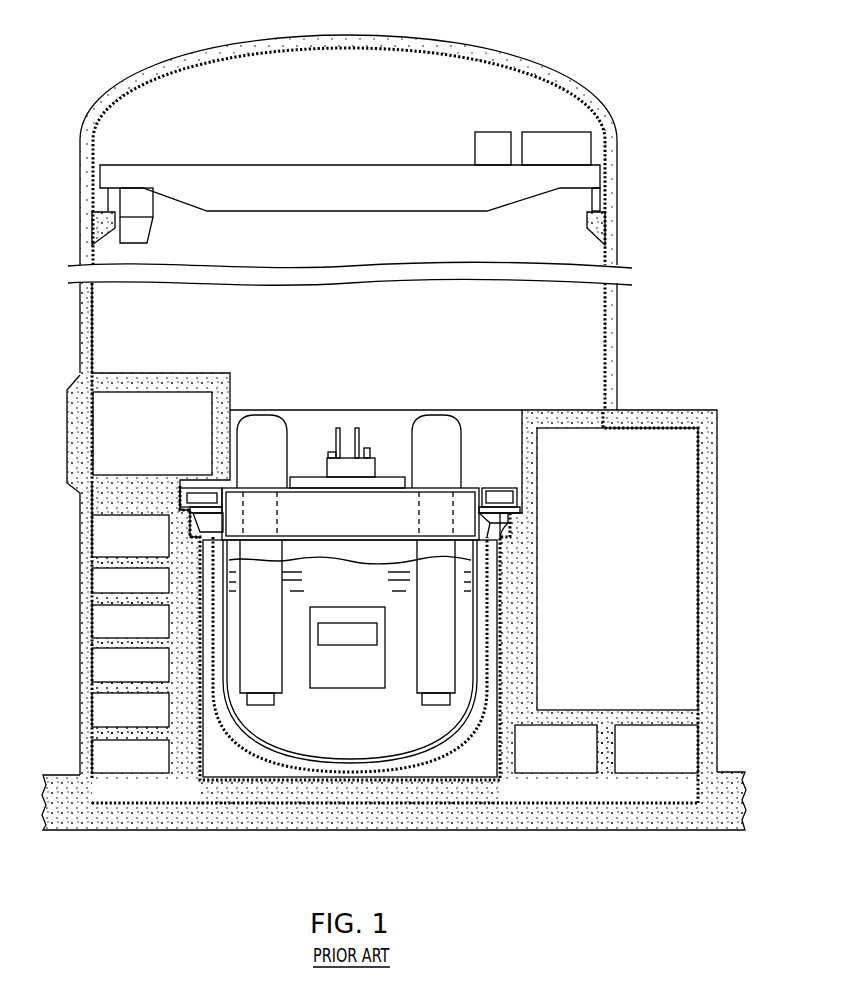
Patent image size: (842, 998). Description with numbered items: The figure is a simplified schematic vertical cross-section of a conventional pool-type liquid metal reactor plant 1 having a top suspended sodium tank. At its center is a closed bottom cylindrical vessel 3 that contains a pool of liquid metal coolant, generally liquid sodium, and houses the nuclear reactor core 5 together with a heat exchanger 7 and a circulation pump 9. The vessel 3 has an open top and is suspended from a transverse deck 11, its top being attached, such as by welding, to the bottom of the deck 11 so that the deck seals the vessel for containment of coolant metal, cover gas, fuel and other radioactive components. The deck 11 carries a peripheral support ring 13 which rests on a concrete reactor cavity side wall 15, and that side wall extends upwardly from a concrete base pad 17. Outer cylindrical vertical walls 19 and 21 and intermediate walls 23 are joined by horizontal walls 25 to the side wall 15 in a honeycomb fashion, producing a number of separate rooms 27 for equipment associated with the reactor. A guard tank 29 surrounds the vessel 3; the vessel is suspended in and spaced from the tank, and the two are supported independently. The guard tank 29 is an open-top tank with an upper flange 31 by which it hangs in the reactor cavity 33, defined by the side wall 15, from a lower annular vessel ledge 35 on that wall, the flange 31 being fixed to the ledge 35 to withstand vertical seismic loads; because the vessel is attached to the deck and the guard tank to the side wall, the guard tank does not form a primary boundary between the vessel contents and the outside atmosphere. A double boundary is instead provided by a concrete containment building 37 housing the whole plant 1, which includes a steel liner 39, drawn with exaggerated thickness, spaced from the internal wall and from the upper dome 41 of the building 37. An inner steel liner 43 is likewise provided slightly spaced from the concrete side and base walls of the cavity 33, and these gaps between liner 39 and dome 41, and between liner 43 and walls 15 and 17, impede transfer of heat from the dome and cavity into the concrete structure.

The liquid metal reactor plant 1 is at (119, 57).
The closed bottom cylindrical vessel 3 is at (345, 749).
The nuclear reactor core 5 is at (353, 676).
The heat exchanger 7 is at (266, 661).
The circulation pump 9 is at (440, 654).
The transverse deck 11 is at (361, 516).
The peripheral support ring 13 is at (497, 485).
The reactor cavity side wall 15 is at (180, 772).
The concrete base pad 17 is at (243, 790).
The outer cylindrical vertical wall 19 is at (75, 688).
The outer cylindrical vertical wall 21 is at (717, 605).
The intermediate wall 23 is at (212, 433).
The horizontal wall 25 is at (124, 607).
The room 27 is at (134, 439).
The guard tank 29 is at (429, 754).
The upper flange 31 is at (511, 518).
The reactor cavity 33 is at (232, 766).
The annular vessel ledge 35 is at (509, 540).
The concrete containment building 37 is at (652, 407).
The steel liner 39 is at (94, 325).
The upper dome 41 is at (619, 143).
The inner steel liner 43 is at (495, 737).